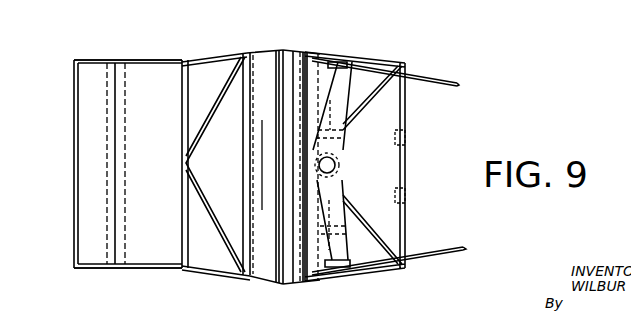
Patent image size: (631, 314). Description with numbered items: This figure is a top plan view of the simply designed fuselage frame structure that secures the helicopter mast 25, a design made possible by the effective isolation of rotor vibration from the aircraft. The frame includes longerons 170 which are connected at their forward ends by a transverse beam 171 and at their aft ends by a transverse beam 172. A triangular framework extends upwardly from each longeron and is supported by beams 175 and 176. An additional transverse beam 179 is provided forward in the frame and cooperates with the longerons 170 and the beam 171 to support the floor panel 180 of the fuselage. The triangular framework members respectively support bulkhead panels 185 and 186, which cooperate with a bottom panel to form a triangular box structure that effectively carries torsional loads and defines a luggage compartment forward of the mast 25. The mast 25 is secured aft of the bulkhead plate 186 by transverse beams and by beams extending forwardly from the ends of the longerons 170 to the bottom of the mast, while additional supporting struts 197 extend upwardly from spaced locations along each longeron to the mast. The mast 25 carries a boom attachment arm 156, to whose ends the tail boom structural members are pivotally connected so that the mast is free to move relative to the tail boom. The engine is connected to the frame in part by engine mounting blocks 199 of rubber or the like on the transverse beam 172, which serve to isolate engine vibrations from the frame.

The mast 25 is at (339, 171).
The boom attachment arm 156 is at (336, 140).
The longerons 170 is at (138, 60).
The forward transverse beam 171 is at (73, 152).
The aft transverse beam 172 is at (406, 87).
The supporting beam 175 is at (228, 53).
The supporting beam 176 is at (378, 58).
The additional transverse beam 179 is at (180, 245).
The floor panel 180 is at (92, 88).
The bulkhead panel 185 is at (262, 266).
The bulkhead panel 186 is at (297, 262).
The strut 197 is at (383, 95).
The engine mounting blocks 199 is at (407, 137).